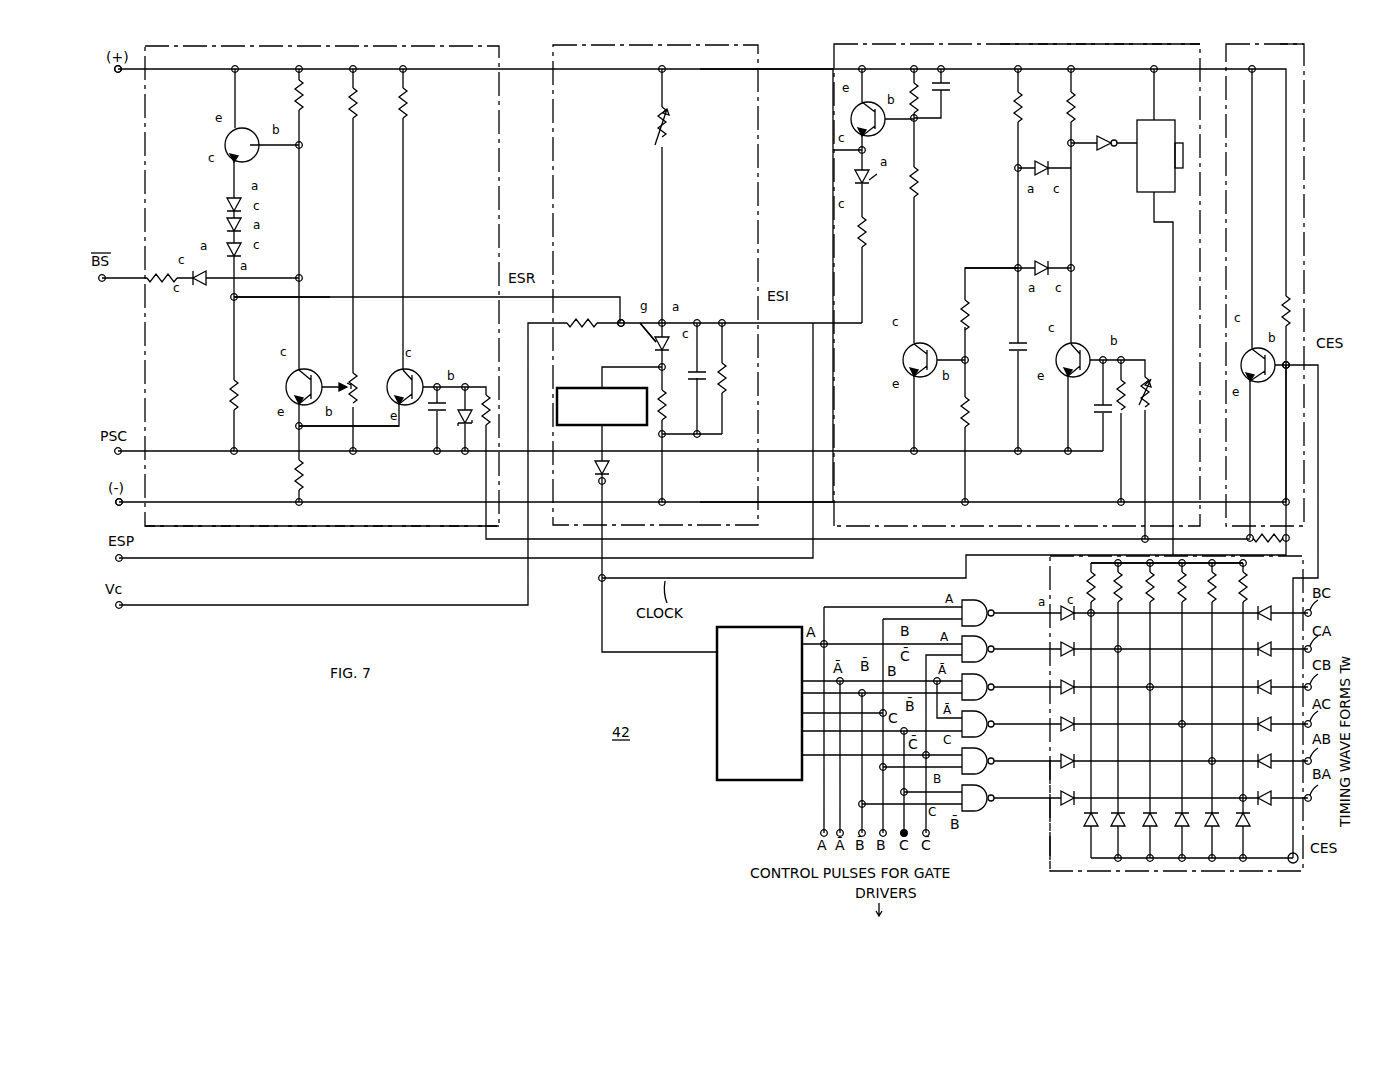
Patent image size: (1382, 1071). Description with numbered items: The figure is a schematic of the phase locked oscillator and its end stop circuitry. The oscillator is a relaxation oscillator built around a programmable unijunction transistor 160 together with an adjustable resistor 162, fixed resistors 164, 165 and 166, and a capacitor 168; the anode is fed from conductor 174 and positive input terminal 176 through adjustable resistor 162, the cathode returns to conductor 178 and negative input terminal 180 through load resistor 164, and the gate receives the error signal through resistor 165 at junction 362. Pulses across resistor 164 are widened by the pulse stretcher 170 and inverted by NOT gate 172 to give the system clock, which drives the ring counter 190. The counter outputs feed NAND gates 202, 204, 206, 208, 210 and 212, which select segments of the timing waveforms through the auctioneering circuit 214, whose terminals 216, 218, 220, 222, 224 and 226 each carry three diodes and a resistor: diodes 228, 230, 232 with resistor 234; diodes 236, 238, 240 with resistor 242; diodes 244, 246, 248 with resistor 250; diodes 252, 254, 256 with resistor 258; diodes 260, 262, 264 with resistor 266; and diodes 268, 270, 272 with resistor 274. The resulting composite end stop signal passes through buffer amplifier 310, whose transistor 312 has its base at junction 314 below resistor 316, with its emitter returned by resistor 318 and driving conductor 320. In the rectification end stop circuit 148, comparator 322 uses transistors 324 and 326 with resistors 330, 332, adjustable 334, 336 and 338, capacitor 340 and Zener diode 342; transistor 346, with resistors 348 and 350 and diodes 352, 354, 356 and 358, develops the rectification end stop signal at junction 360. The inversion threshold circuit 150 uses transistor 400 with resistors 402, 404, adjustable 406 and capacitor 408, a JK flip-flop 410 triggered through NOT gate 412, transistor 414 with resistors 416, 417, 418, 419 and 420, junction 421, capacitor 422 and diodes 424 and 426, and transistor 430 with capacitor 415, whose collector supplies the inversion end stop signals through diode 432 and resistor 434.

The rectification end stop circuit 148 is at (340, 527).
The inversion threshold circuit 150 is at (1178, 32).
The programmable unijunction transistor 160 is at (656, 342).
The adjustable resistor 162 is at (668, 130).
The fixed resistor 164 is at (656, 389).
The fixed resistor 165 is at (586, 316).
The fixed resistor 166 is at (740, 356).
The capacitor 168 is at (694, 380).
The pulse stretcher 170 is at (574, 387).
The NOT gate 172 is at (606, 472).
The conductor 174 is at (782, 69).
The input terminal 176 is at (120, 85).
The conductor 178 is at (782, 501).
The input terminal 180 is at (118, 508).
The ring counter 190 is at (765, 627).
The NAND gate 202 is at (968, 602).
The NAND gate 204 is at (976, 640).
The NAND gate 206 is at (976, 676).
The NAND gate 208 is at (976, 716).
The NAND gate 210 is at (979, 751).
The NAND gate 212 is at (981, 788).
The auctioneering circuit 214 is at (1046, 834).
The terminal 216 is at (1092, 614).
The terminal 218 is at (1120, 652).
The terminal 220 is at (1148, 690).
The terminal 222 is at (1184, 723).
The terminal 224 is at (1210, 759).
The terminal 226 is at (1242, 796).
The diode 228 is at (1049, 610).
The diode 230 is at (1084, 824).
The diode 232 is at (1266, 611).
The resistor 234 is at (1087, 587).
The diode 236 is at (1068, 639).
The diode 238 is at (1120, 814).
The diode 240 is at (1271, 638).
The resistor 242 is at (1109, 561).
The diode 244 is at (1066, 677).
The diode 246 is at (1144, 828).
The diode 248 is at (1271, 677).
The resistor 250 is at (1120, 604).
The diode 252 is at (1066, 714).
The diode 254 is at (1178, 824).
The diode 256 is at (1271, 714).
The resistor 258 is at (1152, 604).
The diode 260 is at (1060, 758).
The diode 262 is at (1210, 828).
The diode 264 is at (1263, 750).
The resistor 266 is at (1214, 603).
The diode 268 is at (1060, 800).
The diode 270 is at (1248, 824).
The diode 272 is at (1263, 789).
The resistor 274 is at (1246, 566).
The buffer amplifier 310 is at (1308, 56).
The transistor 312 is at (1270, 382).
The junction 314 is at (1292, 360).
The resistor 316 is at (1280, 300).
The resistor 318 is at (1268, 536).
The conductor 320 is at (1269, 462).
The comparator 322 is at (387, 412).
The first transistor 324 is at (314, 372).
The second transistor 326 is at (420, 374).
The resistor 330 is at (306, 474).
The resistor 332 is at (348, 104).
The resistor 334 is at (356, 376).
The resistor 336 is at (400, 104).
The resistor 338 is at (484, 394).
The capacitor 340 is at (432, 412).
The voltage regulating diode 342 is at (462, 434).
The transistor 346 is at (242, 130).
The resistor 348 is at (294, 94).
The resistor 350 is at (156, 286).
The diode 352 is at (223, 200).
The diode 354 is at (225, 228).
The diode 356 is at (246, 252).
The diode 358 is at (201, 286).
The junction 360 is at (238, 301).
The junction 362 is at (622, 320).
The transistor 400 is at (1086, 347).
The resistor 402 is at (1062, 104).
The resistor 404 is at (1118, 432).
The resistor 406 is at (1150, 378).
The capacitor 408 is at (1090, 408).
The JK flip-flop 410 is at (1137, 190).
The NOT gate 412 is at (1103, 136).
The transistor 414 is at (932, 344).
The capacitor 415 is at (946, 86).
The resistor 416 is at (970, 308).
The resistor 417 is at (908, 91).
The resistor 418 is at (959, 414).
The resistor 419 is at (918, 180).
The resistor 420 is at (1012, 114).
The junction 421 is at (1014, 264).
The capacitor 422 is at (1008, 356).
The diode 424 is at (1040, 262).
The diode 426 is at (1040, 162).
The transistor 430 is at (886, 134).
The diode 432 is at (876, 190).
The resistor 434 is at (870, 234).